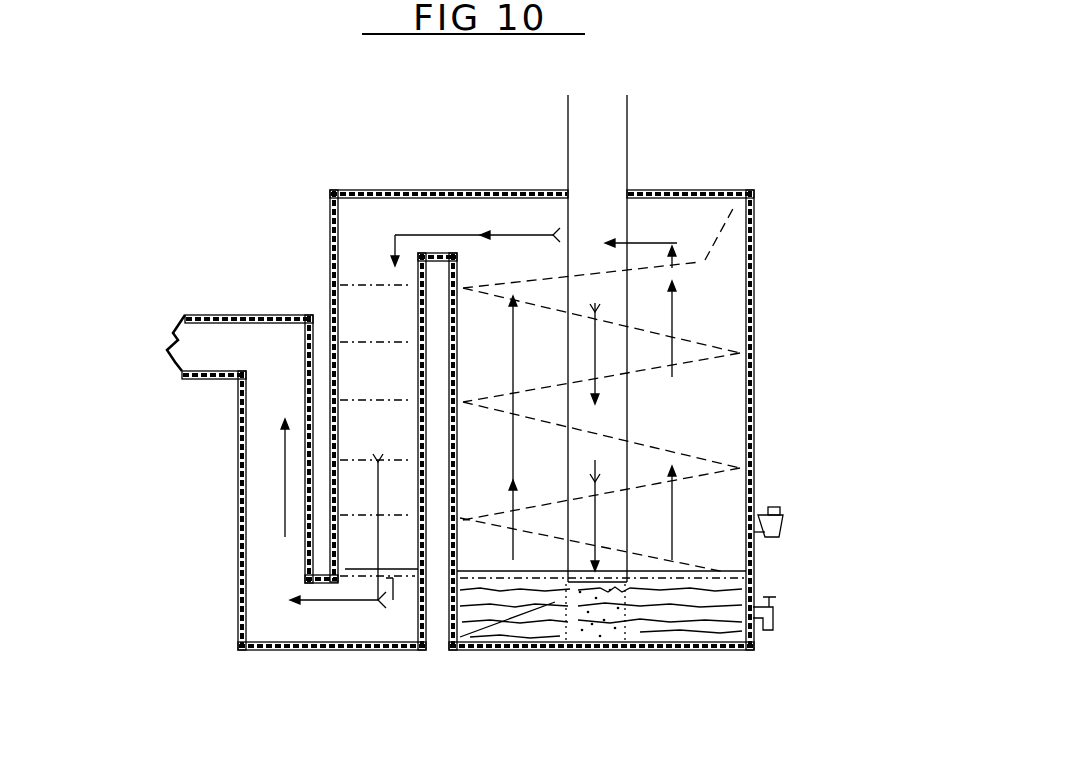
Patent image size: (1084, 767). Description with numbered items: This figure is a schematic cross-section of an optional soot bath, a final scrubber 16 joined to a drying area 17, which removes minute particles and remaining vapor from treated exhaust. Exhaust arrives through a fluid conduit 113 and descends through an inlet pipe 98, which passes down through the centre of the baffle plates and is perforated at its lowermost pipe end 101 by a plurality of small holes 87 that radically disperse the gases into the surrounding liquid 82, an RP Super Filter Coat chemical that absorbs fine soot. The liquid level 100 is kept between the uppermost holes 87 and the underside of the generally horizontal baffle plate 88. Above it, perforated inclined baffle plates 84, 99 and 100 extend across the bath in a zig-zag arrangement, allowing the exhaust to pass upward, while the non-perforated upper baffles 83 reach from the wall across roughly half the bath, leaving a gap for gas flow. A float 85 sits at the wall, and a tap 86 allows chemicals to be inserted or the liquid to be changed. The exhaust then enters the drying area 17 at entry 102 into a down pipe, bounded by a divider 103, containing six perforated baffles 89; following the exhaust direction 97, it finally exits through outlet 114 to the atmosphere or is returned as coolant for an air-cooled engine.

The final scrubber 16 is at (755, 288).
The bath drying area 17 is at (330, 268).
The liquid 82 is at (718, 637).
The upper baffles 83 is at (710, 254).
The baffle plates 84 is at (699, 450).
The float 85 is at (783, 520).
The tap 86 is at (773, 614).
The small holes 87 is at (620, 613).
The baffle plate 88 is at (510, 577).
The perforated baffles 89 is at (393, 600).
The exhaust direction 97 is at (330, 598).
The inlet pipe 98 is at (613, 222).
The baffle plate 99 is at (688, 338).
The baffle plates 100 is at (743, 553).
The pipe end 101 is at (565, 617).
The drying area entry 102 is at (443, 208).
The divider partition 103 is at (423, 612).
The fluid conduit 113 is at (630, 148).
The exhaust outlet 114 is at (236, 400).